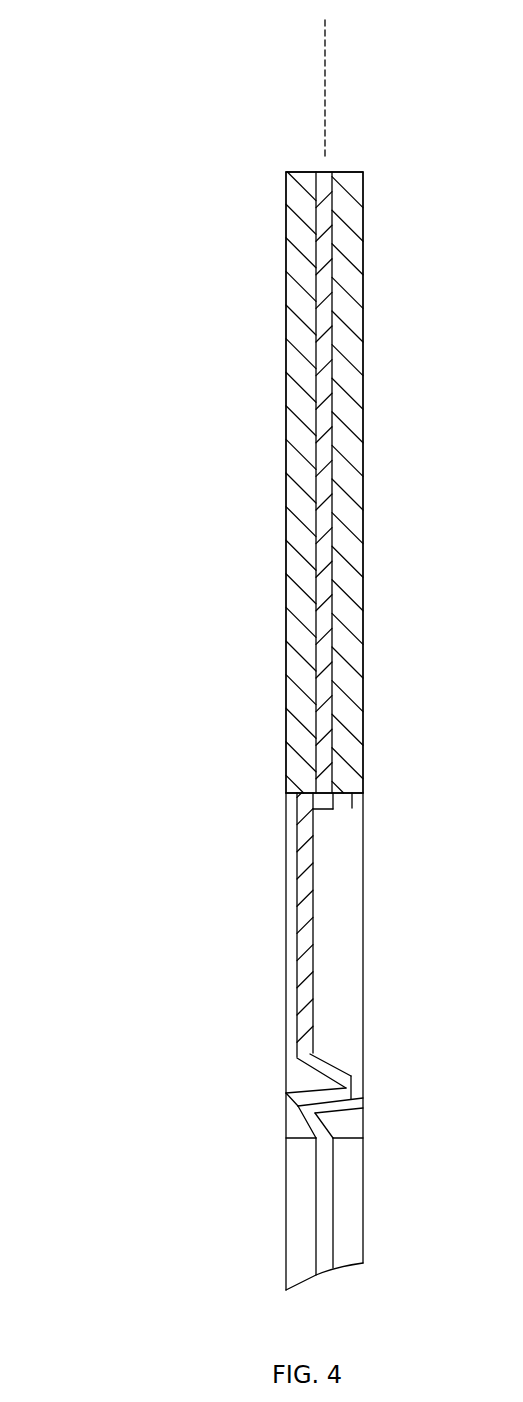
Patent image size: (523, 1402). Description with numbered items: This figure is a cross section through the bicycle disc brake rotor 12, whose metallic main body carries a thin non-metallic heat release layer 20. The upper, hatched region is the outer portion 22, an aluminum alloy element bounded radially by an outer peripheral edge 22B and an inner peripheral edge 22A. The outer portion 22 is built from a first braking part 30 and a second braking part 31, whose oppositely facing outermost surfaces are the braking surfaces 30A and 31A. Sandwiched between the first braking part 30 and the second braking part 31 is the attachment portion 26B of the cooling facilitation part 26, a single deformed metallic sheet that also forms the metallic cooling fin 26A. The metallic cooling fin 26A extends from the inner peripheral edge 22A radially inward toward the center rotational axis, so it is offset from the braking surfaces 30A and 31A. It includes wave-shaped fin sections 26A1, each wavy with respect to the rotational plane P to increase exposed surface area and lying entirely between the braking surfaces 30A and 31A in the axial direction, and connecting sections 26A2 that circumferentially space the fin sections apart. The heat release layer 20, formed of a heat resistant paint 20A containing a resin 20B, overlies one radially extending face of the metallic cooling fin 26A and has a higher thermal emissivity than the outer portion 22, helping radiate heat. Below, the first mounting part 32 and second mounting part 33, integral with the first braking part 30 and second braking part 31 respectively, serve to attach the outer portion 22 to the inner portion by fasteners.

The rotational plane P is at (327, 42).
The bicycle disc brake rotor 12 is at (135, 370).
The outer portion 22 is at (335, 483).
The inner peripheral edge 22A is at (315, 809).
The outer peripheral edge 22B is at (322, 168).
The first braking part 30 is at (300, 330).
The braking surface 30A is at (288, 586).
The second braking part 31 is at (345, 278).
The braking surface 31A is at (362, 549).
The attachment portion 26B is at (326, 673).
The cooling facilitation part 26 is at (290, 933).
The metallic cooling fin 26A is at (340, 1012).
The wave-shaped fin section 26A1 is at (364, 1094).
The connecting section 26A2 is at (325, 1202).
The heat release layer 20 is at (223, 927).
The heat resistant paint 20A is at (287, 995).
The resin 20B is at (287, 1035).
The first mounting part 32 is at (300, 1244).
The second mounting part 33 is at (346, 1173).